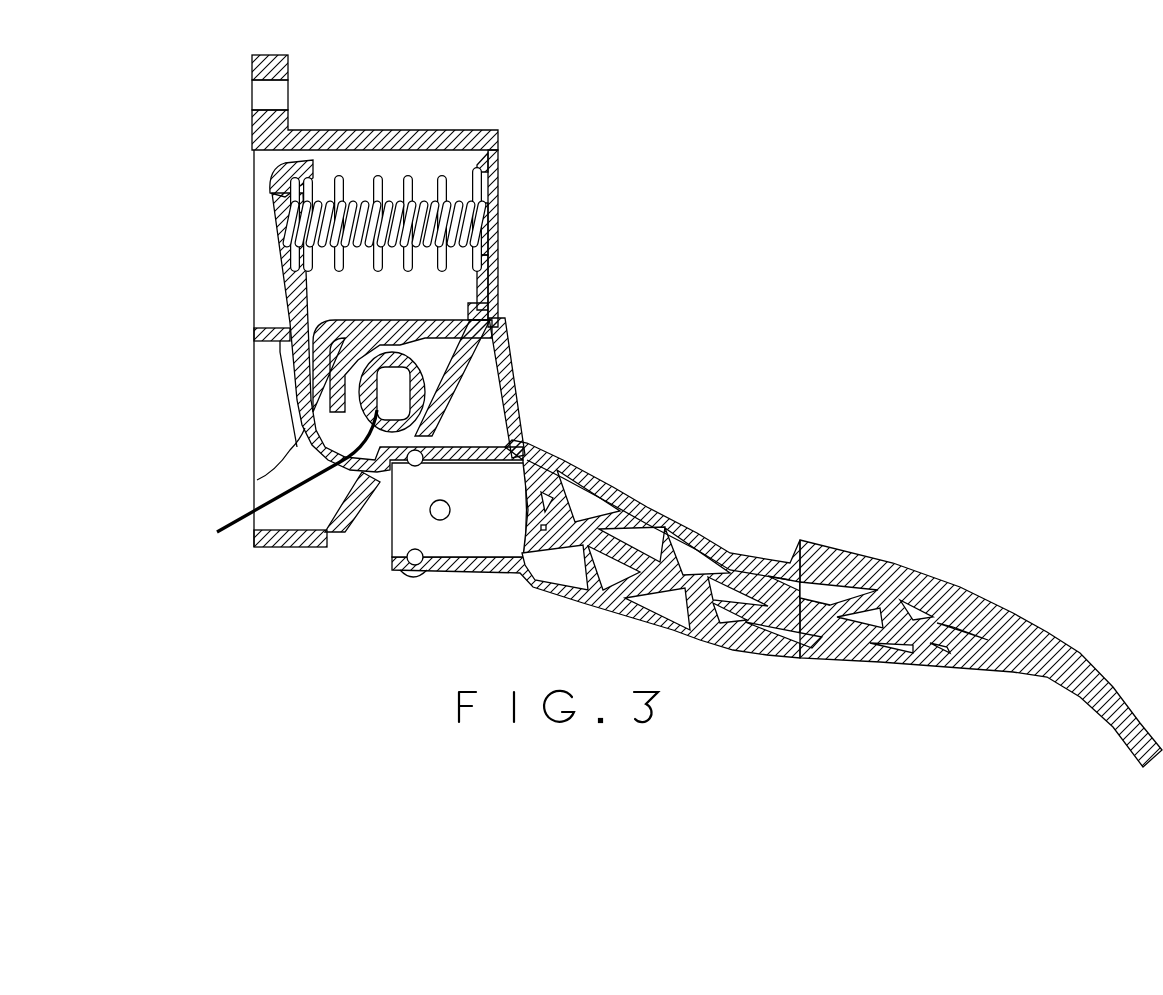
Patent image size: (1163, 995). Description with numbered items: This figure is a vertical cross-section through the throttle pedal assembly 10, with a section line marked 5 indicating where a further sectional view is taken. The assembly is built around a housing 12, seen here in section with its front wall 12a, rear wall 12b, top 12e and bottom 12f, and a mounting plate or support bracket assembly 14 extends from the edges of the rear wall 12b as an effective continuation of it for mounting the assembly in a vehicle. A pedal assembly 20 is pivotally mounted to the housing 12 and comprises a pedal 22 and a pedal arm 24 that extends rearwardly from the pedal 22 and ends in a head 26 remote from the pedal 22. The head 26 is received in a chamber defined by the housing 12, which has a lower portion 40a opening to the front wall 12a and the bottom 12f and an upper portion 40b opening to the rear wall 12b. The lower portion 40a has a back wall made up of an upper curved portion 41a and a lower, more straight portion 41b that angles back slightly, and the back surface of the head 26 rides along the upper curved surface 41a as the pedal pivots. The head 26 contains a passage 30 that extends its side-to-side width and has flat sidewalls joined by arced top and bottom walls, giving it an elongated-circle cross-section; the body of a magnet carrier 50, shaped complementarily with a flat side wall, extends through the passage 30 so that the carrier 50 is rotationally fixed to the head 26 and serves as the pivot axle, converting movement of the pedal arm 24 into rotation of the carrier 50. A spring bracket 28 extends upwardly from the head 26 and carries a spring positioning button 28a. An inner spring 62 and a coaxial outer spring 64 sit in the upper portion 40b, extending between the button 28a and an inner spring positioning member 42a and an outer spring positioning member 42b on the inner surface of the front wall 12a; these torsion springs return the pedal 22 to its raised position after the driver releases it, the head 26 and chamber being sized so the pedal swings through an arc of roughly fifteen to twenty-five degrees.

The throttle pedal assembly 10 is at (598, 180).
The housing 12 is at (470, 124).
The front wall 12a is at (498, 168).
The rear wall 12b is at (255, 337).
The top 12e is at (310, 130).
The bottom 12f is at (282, 548).
The mounting plate or support bracket assembly 14 is at (288, 58).
The pedal assembly 20 is at (755, 518).
The pedal 22 is at (903, 556).
The pedal arm 24 is at (653, 507).
The head 26 is at (532, 327).
The spring bracket 28 is at (273, 193).
The spring positioning button 28a is at (317, 220).
The passage 30 is at (278, 484).
The chamber lower portion 40a is at (485, 430).
The chamber upper portion 40b is at (270, 273).
The upper curved portion of back wall 41a is at (257, 480).
The lower straight portion of back wall 41b is at (347, 517).
The inner spring positioning member 42a is at (488, 207).
The outer spring positioning member 42b is at (488, 286).
The magnet carrier 50 is at (432, 365).
The inner spring 62 is at (425, 197).
The outer spring 64 is at (343, 177).
The section line 5- 5 is at (232, 388).